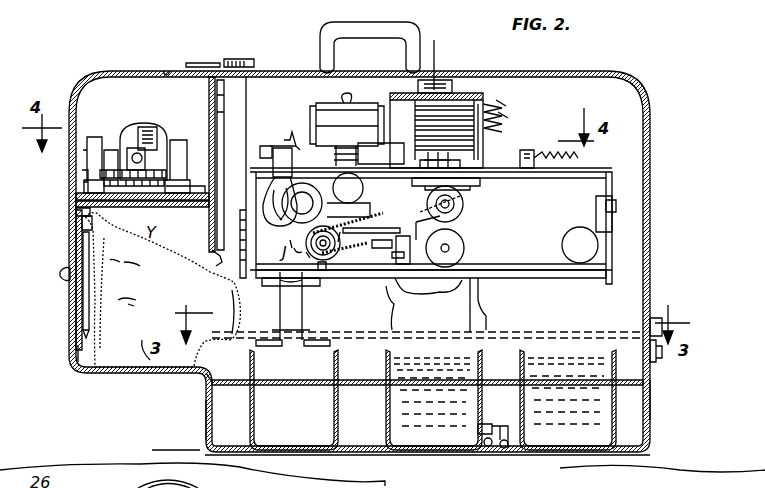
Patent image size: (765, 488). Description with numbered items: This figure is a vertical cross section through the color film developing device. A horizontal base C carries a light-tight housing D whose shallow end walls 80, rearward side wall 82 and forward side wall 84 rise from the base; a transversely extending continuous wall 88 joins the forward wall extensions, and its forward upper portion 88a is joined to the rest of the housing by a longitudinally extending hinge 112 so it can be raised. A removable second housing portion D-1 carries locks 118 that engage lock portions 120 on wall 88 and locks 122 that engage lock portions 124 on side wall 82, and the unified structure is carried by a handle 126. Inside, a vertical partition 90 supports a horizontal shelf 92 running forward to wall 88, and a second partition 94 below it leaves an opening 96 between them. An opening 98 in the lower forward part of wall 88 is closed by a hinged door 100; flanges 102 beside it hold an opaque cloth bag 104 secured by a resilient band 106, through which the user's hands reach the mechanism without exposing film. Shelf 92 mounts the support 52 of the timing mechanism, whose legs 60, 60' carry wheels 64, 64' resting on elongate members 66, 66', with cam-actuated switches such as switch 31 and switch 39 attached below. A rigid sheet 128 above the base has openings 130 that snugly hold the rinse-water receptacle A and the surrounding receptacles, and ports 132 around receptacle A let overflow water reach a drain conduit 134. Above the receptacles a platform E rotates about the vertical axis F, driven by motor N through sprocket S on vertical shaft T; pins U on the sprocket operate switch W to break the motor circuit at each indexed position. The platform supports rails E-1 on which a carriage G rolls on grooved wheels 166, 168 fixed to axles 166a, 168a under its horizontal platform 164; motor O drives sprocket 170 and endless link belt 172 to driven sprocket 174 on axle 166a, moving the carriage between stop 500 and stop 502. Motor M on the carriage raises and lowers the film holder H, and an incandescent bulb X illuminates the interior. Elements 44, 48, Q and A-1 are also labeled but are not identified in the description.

The forward upper portion of the wall structure 88a is at (118, 71).
The continuous wall 88 is at (70, 356).
The forward side wall 84 is at (206, 413).
The rearward side wall 82 is at (652, 410).
The second partition 94 is at (207, 360).
The hinge 112 is at (168, 69).
The lock portions 120 is at (205, 61).
The locks 118 is at (246, 60).
The handle 126 is at (386, 24).
The vertical axis F is at (438, 56).
The second housing portion D-1 is at (516, 69).
The vertical partition 90 is at (217, 96).
The wheel 64' is at (238, 165).
The elongate member 66 is at (123, 200).
The elongate member 66' is at (219, 180).
The switch 39 is at (82, 172).
The wheel 64 is at (98, 140).
The leg 60 is at (125, 133).
The blower unit 44 is at (140, 150).
The leg 60' is at (168, 130).
The element 48 is at (185, 164).
The switch 31 is at (170, 176).
The support 52 is at (190, 191).
The horizontal shelf 92 is at (152, 207).
The opening 98 is at (74, 320).
The resilient band 106 is at (74, 212).
The door 100 is at (70, 222).
The flanges 102 is at (90, 234).
The opaque cloth bag 104 is at (162, 290).
The opening 96 is at (210, 250).
The platform E is at (584, 166).
The rails E-1 is at (542, 280).
The motor Q is at (347, 116).
The electrical switch W is at (369, 154).
The vertical shaft T is at (420, 142).
The sprocket S is at (441, 152).
The pins U is at (500, 128).
The drive mechanism motor N is at (440, 166).
The stop 500 is at (589, 231).
The incandescent bulb X is at (280, 234).
The stop 502 is at (296, 144).
The motor M is at (318, 196).
The axle 166a is at (324, 260).
The grooved wheels 166 is at (348, 262).
The carriage G is at (352, 244).
The horizontal platform 164 is at (412, 246).
The driven sprocket 174 is at (280, 262).
The film holder H is at (306, 324).
The driving sprocket 170 is at (466, 198).
The endless link belt 172 is at (462, 208).
The motor O is at (510, 198).
The axle 168a is at (466, 256).
The grooved wheels 168 is at (480, 270).
The sheet 128 is at (238, 386).
The end walls 80 is at (374, 368).
The ports 132 is at (340, 386).
The openings 130 is at (470, 388).
The receptacle A is at (482, 378).
The drain conduit 134 is at (484, 452).
The tank outlet A-1 is at (514, 458).
The base C is at (382, 455).
The light-tight housing D is at (652, 434).
The locks 122 is at (664, 320).
The lock portions 124 is at (658, 362).